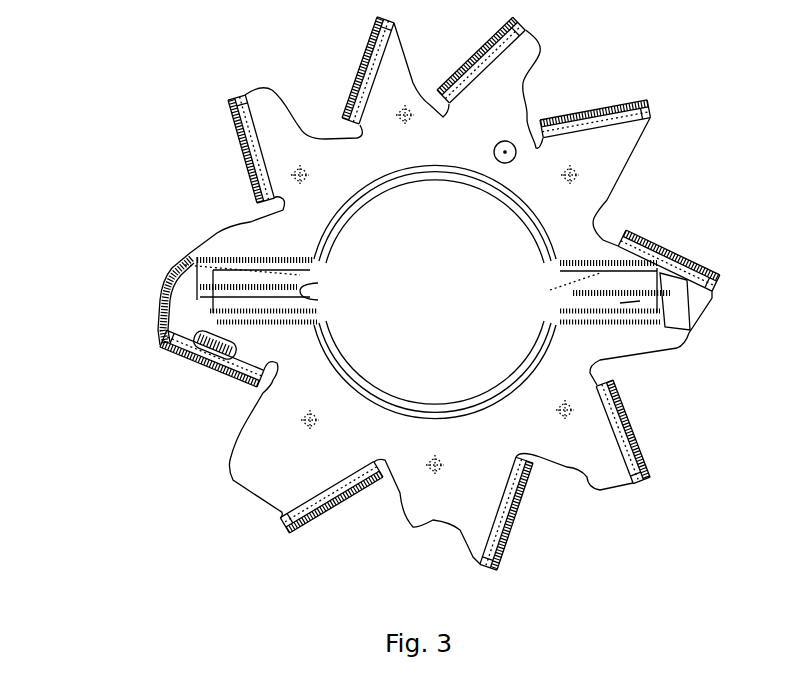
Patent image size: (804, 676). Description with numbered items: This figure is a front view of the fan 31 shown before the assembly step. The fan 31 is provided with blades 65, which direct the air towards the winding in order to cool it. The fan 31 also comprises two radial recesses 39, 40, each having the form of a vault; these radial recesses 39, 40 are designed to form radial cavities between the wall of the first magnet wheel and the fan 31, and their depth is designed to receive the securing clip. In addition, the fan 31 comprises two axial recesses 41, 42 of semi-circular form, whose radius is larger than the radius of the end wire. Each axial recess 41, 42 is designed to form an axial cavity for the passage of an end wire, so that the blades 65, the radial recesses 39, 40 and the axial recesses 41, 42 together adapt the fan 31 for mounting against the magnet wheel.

The fan 31 is at (158, 111).
The radial recess 39 is at (195, 257).
The radial recess 40 is at (690, 337).
The axial recess 41 is at (193, 330).
The axial recess 42 is at (706, 281).
The blades 65 is at (250, 458).